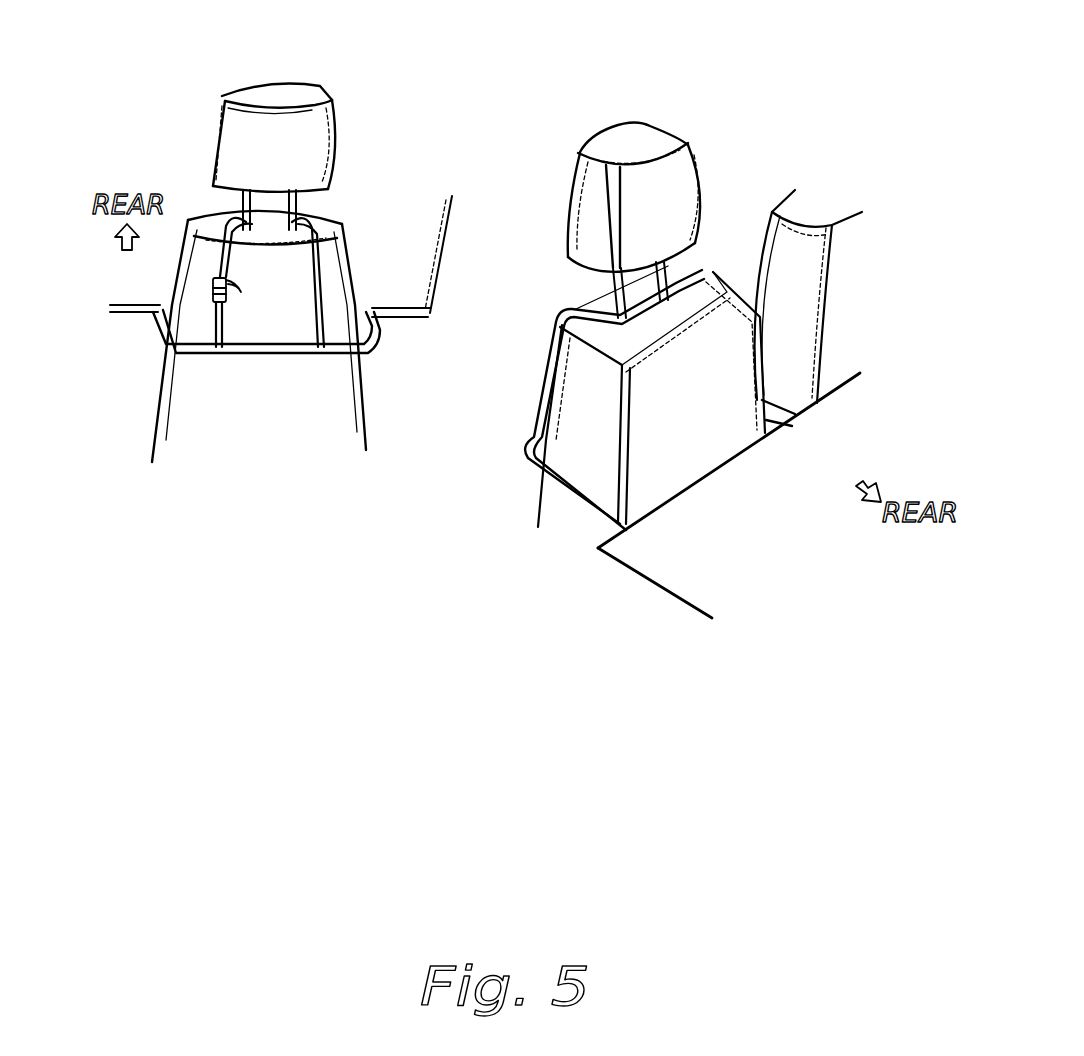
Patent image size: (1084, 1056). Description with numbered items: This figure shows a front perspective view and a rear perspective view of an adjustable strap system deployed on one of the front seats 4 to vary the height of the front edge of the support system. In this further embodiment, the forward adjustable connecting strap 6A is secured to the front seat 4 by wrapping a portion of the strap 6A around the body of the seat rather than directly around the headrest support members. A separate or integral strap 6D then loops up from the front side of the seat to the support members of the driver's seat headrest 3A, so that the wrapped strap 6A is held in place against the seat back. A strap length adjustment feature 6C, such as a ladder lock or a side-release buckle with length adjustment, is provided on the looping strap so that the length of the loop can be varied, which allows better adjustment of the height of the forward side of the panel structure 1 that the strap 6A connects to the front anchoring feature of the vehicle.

The panel structure 1 is at (446, 259).
The driver's seat headrest 3A is at (303, 196).
The front seat 4 is at (708, 267).
The connecting strap 6A is at (583, 527).
The strap length adjustment feature 6C is at (208, 293).
The strap 6D is at (318, 262).